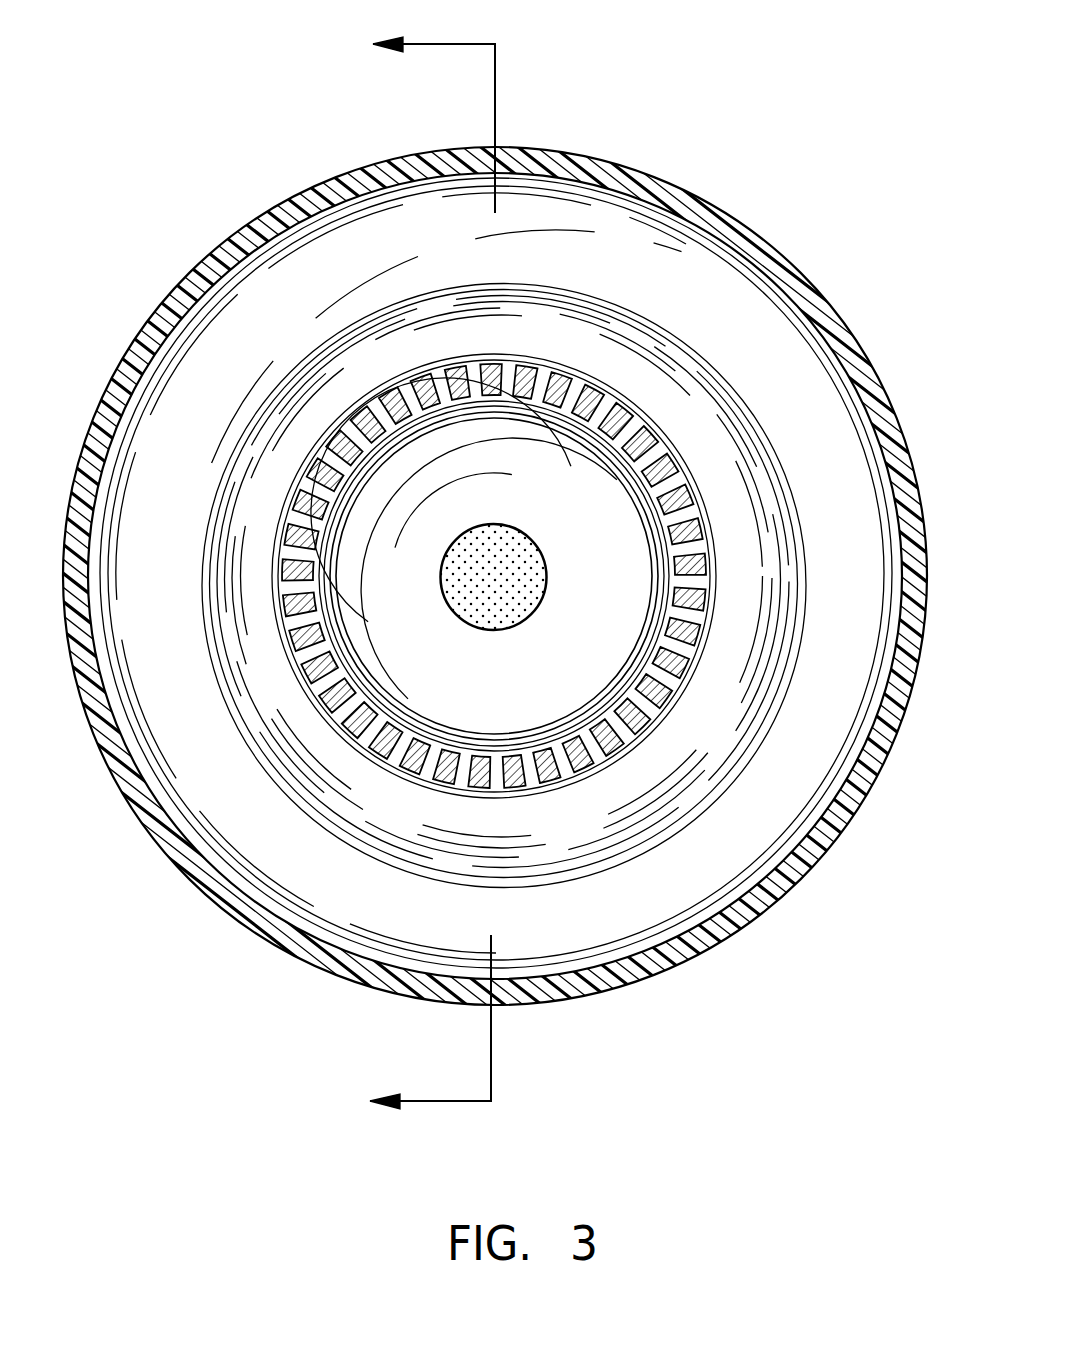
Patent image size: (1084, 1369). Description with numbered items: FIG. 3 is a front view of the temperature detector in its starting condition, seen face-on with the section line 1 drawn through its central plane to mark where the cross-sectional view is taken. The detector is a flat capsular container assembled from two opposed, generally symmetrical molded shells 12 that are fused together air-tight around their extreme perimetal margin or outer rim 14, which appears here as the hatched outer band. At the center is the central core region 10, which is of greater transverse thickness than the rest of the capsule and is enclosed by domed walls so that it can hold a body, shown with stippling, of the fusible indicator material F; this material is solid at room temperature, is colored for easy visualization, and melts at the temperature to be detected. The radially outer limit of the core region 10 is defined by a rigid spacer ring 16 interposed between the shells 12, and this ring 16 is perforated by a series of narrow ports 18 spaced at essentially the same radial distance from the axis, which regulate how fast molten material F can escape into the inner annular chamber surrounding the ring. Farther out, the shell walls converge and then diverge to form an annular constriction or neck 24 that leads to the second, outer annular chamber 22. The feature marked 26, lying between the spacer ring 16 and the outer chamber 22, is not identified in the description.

The section line 1- 1 is at (432, 573).
The central core region 10 is at (506, 695).
The shell 12 is at (830, 303).
The outer rim 14 is at (543, 157).
The spacer ring 16 is at (654, 660).
The ports 18 is at (332, 676).
The second annular chamber 22 is at (735, 853).
The annular constriction or neck 24 is at (333, 828).
The inner annular ring 26 is at (700, 750).
The fusible indicator material F is at (527, 580).